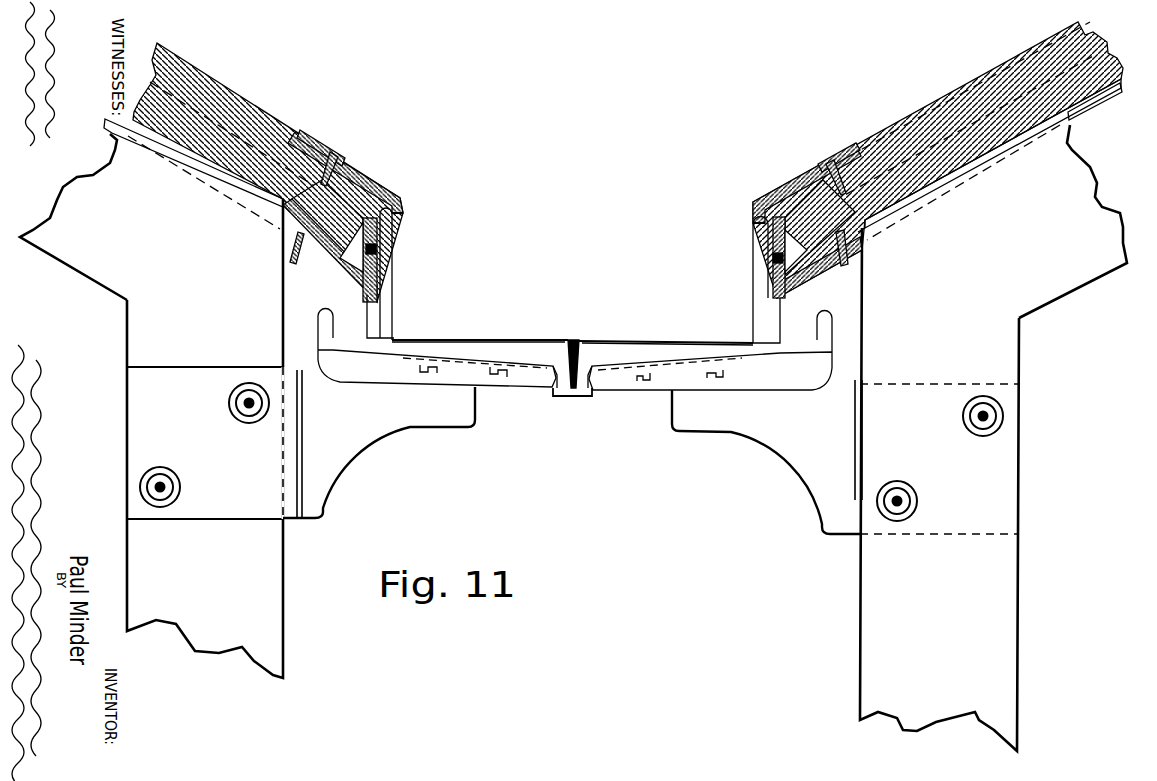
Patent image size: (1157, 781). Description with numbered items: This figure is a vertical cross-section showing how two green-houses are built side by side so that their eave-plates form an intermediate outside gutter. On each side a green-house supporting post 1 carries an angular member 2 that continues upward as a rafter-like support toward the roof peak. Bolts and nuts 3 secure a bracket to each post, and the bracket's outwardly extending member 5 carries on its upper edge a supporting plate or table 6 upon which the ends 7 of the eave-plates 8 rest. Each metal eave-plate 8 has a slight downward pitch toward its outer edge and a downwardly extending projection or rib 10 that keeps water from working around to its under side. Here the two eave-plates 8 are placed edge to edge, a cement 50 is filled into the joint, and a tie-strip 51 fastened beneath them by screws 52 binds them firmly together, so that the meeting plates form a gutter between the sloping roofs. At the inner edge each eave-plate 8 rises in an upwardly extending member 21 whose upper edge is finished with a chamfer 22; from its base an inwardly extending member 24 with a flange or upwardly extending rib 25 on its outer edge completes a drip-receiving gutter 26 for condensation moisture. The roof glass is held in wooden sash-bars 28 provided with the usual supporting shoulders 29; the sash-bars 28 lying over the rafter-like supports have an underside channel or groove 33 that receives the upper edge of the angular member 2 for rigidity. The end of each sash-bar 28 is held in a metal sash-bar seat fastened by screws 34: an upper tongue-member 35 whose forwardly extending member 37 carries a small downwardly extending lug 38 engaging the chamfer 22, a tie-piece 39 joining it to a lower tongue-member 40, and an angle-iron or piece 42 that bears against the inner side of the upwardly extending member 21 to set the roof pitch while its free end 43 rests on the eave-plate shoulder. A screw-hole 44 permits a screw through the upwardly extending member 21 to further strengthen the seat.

The green-house supporting post 1 is at (268, 582).
The angular member 2 is at (70, 260).
The bolts and nuts 3 is at (168, 475).
The outwardly extending member 5 is at (378, 427).
The supporting plate or table 6 is at (395, 373).
The ends of eave-plates 7 is at (521, 347).
The eave-plate 8 is at (478, 341).
The downwardly extending projection or rib 10 is at (562, 392).
The upwardly extending member 21 is at (395, 285).
The chamfer 22 is at (396, 226).
The inwardly extending member 24 is at (352, 346).
The flange or upwardly extending rib 25 is at (320, 318).
The drip-receiving gutter 26 is at (345, 345).
The sash-bar 28 is at (218, 125).
The supporting shoulders 29 is at (265, 130).
The channel or groove 33 is at (1092, 115).
The screws 34 is at (340, 157).
The upper tongue-member 35 is at (313, 141).
The forwardly extending member 37 is at (399, 195).
The downwardly extending lug 38 is at (405, 207).
The tie-piece 39 is at (283, 206).
The lower tongue-member 40 is at (288, 242).
The angle-iron or piece 42 is at (572, 256).
The free end 43 is at (378, 236).
The screw-hole 44 is at (377, 253).
The cement 50 is at (575, 340).
The tie-strip 51 is at (575, 397).
The screws 52 is at (438, 372).